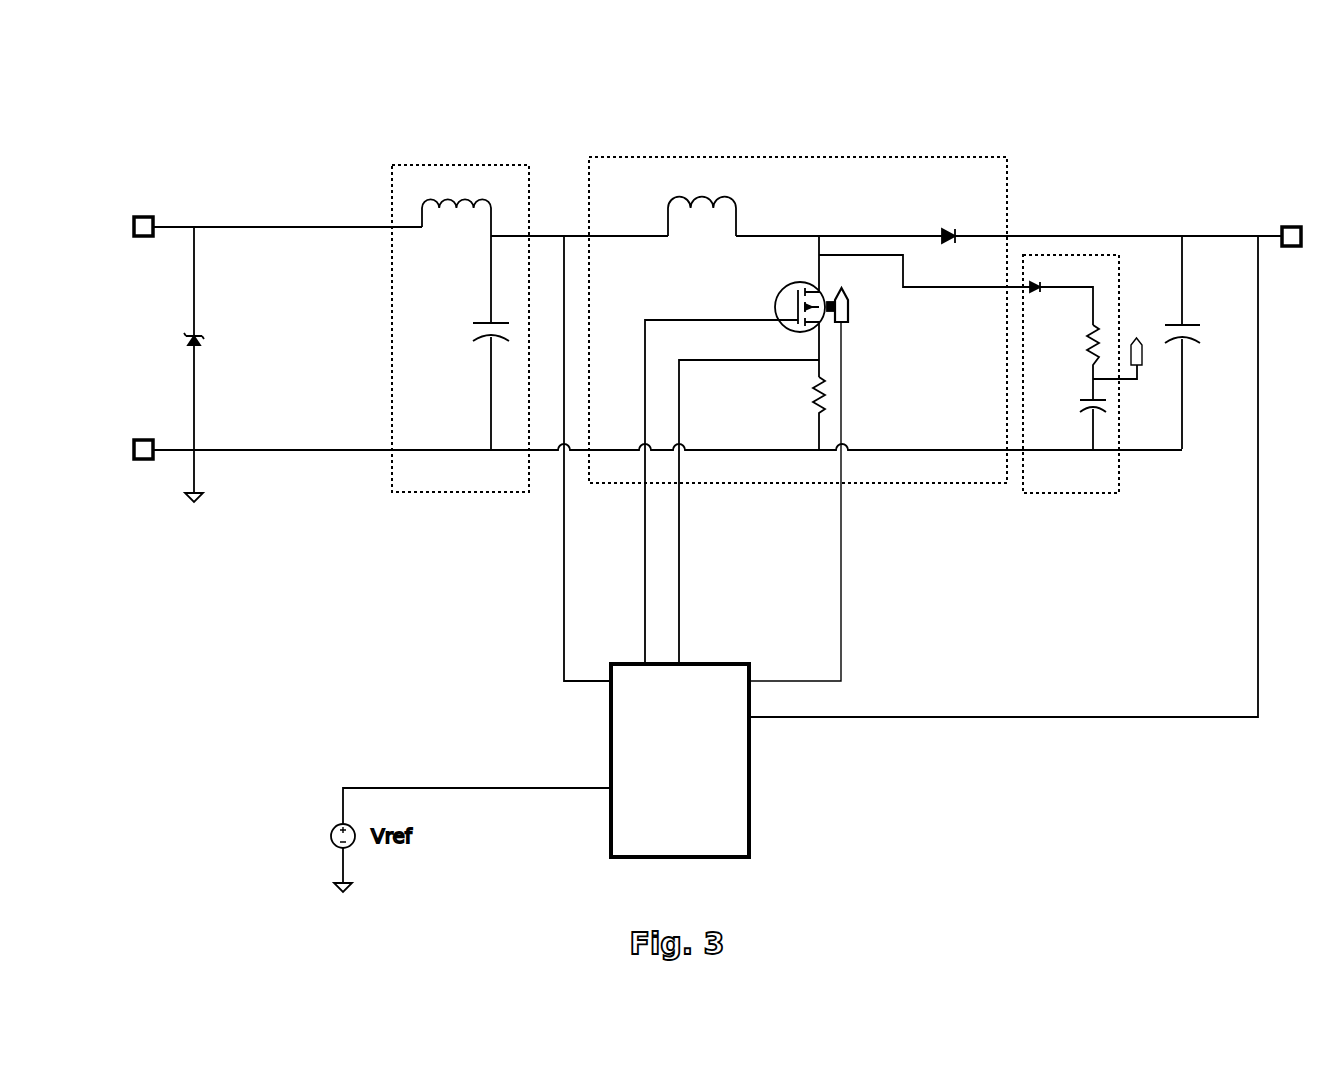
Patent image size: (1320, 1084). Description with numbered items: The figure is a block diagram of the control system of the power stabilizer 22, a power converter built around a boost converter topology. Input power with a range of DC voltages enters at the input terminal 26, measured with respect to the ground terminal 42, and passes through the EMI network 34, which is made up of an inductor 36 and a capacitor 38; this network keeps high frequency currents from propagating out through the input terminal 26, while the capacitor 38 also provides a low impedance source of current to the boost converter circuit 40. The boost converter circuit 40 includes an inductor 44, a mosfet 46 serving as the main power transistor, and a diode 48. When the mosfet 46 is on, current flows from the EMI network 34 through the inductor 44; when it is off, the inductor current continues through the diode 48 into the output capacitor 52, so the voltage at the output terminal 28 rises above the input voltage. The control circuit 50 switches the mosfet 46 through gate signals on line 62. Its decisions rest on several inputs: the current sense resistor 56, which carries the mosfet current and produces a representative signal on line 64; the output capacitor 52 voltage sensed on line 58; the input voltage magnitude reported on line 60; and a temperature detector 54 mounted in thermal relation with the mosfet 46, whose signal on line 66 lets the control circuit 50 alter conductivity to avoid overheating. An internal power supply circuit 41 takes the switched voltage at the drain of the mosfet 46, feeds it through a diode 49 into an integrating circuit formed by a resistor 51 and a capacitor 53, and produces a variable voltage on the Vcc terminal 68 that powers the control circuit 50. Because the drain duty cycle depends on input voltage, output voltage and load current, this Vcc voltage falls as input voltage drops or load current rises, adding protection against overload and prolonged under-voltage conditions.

The power stabilizer 22 is at (713, 71).
The input terminal 26 is at (123, 227).
The output terminal 28 is at (1289, 217).
The EMI network 34 is at (384, 164).
The inductor 36 is at (463, 210).
The capacitor 38 is at (470, 344).
The boost converter circuit 40 is at (657, 157).
The internal power supply circuit 41 is at (1100, 253).
The ground terminal 42 is at (123, 450).
The inductor 44 is at (737, 200).
The mosfet 46 is at (782, 292).
The diode 48 is at (948, 225).
The diode 49 is at (1060, 303).
The control circuit 50 is at (596, 716).
The resistor 51 is at (1079, 362).
The output capacitor 52 is at (1198, 343).
The capacitor 53 is at (1080, 421).
The temperature detector 54 is at (855, 313).
The current sense resistor 56 is at (805, 413).
The line 58 is at (1254, 557).
The line 60 is at (568, 510).
The line 62 is at (670, 318).
The line 64 is at (767, 360).
The line 66 is at (852, 625).
The Vcc terminal 68 is at (1121, 347).